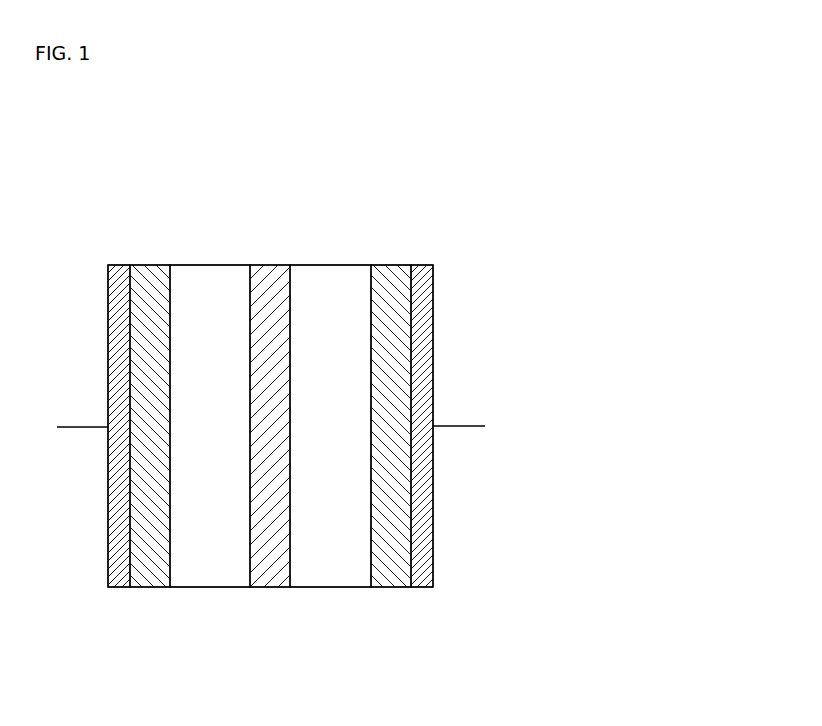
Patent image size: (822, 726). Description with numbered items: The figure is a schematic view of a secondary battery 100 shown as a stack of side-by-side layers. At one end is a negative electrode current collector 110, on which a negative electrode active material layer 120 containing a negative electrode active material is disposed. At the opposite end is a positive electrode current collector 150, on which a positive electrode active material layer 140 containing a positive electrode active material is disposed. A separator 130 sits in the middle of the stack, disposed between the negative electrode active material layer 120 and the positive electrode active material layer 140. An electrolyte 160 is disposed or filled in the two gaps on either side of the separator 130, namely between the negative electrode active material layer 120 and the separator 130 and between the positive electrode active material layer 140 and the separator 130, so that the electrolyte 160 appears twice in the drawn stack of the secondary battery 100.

The secondary battery 100 is at (401, 238).
The negative electrode current collector 110 is at (117, 587).
The negative electrode active material layer 120 is at (150, 587).
The separator 130 is at (270, 587).
The positive electrode active material layer 140 is at (383, 587).
The positive electrode current collector 150 is at (420, 587).
The electrolyte 160 is at (212, 587).